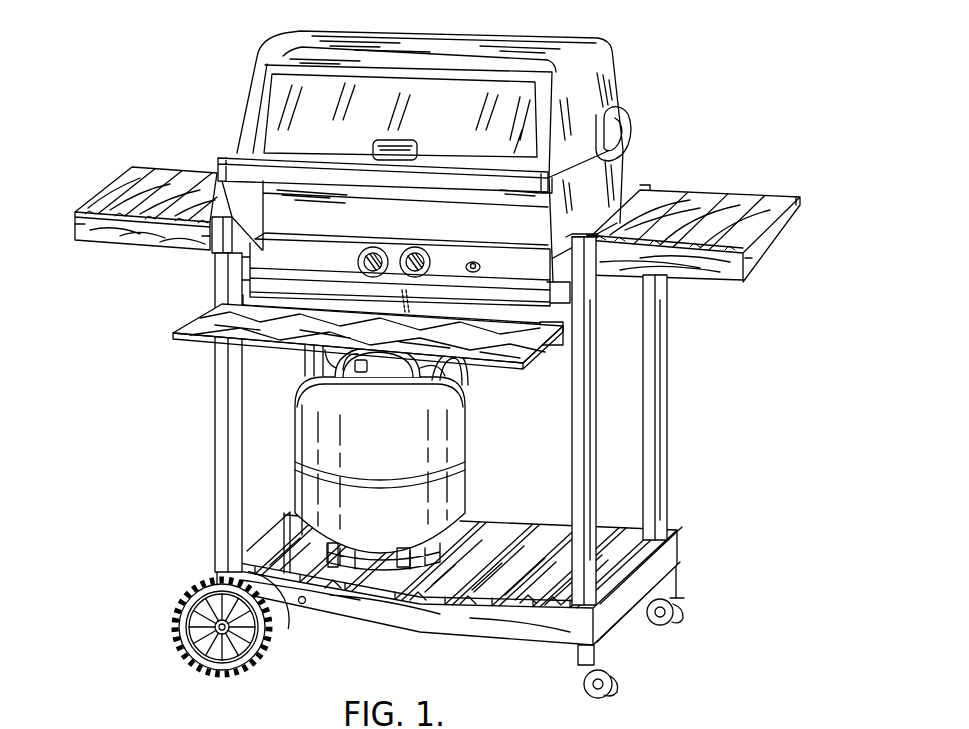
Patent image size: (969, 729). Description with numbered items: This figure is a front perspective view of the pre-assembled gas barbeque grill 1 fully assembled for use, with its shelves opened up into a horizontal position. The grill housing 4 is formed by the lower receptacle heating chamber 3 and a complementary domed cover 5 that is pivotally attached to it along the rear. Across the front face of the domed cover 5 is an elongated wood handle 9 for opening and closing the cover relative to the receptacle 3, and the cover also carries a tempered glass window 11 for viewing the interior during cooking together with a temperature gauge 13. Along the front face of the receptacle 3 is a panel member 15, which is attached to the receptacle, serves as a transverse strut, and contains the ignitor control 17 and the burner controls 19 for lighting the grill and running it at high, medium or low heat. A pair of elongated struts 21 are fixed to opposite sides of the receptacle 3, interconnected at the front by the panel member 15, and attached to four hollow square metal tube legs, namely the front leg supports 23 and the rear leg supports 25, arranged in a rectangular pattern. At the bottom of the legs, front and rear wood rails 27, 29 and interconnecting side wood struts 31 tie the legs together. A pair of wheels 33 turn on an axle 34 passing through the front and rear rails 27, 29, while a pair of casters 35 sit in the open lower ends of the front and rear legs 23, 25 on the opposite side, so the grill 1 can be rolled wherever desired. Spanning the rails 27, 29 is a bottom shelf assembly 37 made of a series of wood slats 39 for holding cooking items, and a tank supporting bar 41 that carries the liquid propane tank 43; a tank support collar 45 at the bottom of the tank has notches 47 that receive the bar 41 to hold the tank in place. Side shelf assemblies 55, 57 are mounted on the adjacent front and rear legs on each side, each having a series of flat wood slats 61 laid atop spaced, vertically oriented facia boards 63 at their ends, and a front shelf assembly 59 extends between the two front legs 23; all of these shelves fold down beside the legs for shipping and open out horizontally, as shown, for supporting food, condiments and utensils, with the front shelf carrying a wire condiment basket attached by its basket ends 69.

The gas barbeque grill 1 is at (765, 0).
The lower receptacle heating chamber 3 is at (598, 172).
The grill housing 4 is at (648, 119).
The domed cover 5 is at (593, 102).
The elongated wood handle 9 is at (228, 160).
The tempered glass window 11 is at (279, 92).
The temperature gauge 13 is at (405, 150).
The panel member 15 is at (265, 256).
The ignitor control 17 is at (475, 249).
The burner controls 19 is at (376, 248).
The elongated struts 21 is at (197, 243).
The front leg supports 23 is at (222, 352).
The rear leg supports 25 is at (656, 329).
The front wood rail 27 is at (470, 622).
The rear wood rail 29 is at (475, 523).
The side wood struts 31 is at (270, 535).
The wheels 33 is at (190, 655).
The axle 34 is at (300, 547).
The casters 35 is at (688, 620).
The bottom shelf assembly 37 is at (527, 612).
The wood slats 39 is at (433, 610).
The tank supporting bar 41 is at (344, 584).
The liquid propane tank 43 is at (338, 447).
The tank support collar 45 is at (397, 562).
The notches 47 is at (346, 592).
The side shelf assembly 55 is at (176, 157).
The side shelf assembly 57 is at (737, 177).
The front shelf assembly 59 is at (330, 362).
The flat wood slats 61 is at (700, 182).
The facia boards 63 is at (802, 205).
The basket ends 69 is at (572, 337).